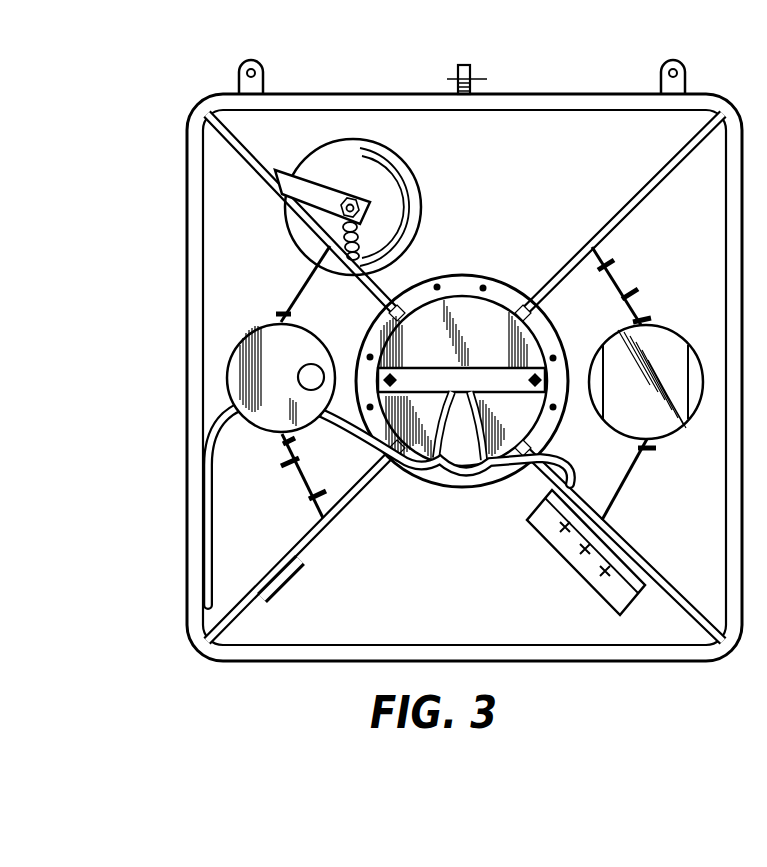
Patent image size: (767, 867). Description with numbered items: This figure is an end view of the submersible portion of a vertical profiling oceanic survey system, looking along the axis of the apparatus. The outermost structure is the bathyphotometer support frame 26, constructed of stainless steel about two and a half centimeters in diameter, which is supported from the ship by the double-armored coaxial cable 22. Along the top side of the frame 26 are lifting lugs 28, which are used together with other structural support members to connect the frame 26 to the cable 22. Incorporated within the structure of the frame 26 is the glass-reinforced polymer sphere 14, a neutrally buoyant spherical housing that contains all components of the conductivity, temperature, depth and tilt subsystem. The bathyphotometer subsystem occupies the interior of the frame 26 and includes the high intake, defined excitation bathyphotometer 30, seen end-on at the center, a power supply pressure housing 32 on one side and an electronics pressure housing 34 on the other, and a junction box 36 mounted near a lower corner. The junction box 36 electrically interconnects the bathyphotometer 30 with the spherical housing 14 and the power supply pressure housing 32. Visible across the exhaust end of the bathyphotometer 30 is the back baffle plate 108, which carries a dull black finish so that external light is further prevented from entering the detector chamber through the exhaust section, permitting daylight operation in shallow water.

The glass-reinforced polymer sphere 14 is at (369, 158).
The double-armored coaxial cable 22 is at (244, 401).
The bathyphotometer support frame 26 is at (578, 97).
The lifting lugs 28 is at (261, 62).
The HIDEX bathyphotometer 30 is at (443, 510).
The power supply pressure housing 32 is at (268, 426).
The electronics pressure housing 34 is at (678, 428).
The junction box 36 is at (588, 562).
The back baffle plate 108 is at (480, 322).